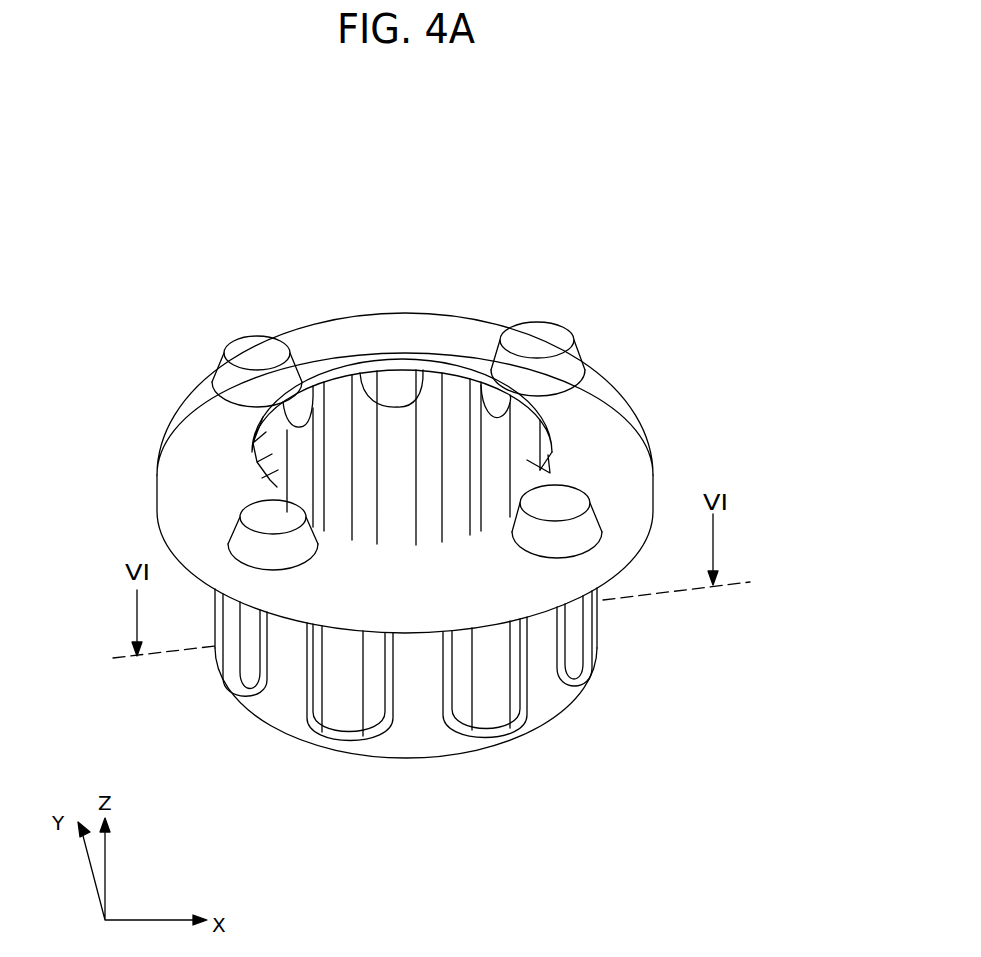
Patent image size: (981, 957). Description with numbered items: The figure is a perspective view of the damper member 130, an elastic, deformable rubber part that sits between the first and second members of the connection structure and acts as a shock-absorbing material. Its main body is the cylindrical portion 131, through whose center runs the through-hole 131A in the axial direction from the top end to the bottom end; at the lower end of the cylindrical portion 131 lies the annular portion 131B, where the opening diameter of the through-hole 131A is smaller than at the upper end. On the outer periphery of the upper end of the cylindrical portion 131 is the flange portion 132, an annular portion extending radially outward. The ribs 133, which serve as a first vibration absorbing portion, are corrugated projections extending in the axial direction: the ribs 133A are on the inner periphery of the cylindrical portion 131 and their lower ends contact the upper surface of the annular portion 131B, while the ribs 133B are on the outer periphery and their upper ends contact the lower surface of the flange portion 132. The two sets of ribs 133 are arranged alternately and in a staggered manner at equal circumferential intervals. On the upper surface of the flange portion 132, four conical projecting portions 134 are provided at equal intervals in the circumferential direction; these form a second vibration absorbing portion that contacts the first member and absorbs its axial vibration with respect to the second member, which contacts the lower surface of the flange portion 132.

The damper member 130 is at (689, 126).
The cylindrical portion 131 is at (553, 695).
The through-hole 131A is at (362, 410).
The annular portion 131B is at (412, 757).
The flange portion 132 is at (615, 437).
The ribs 133 is at (506, 478).
The ribs 133A is at (395, 388).
The ribs 133B is at (588, 633).
The projecting portions 134 is at (537, 340).